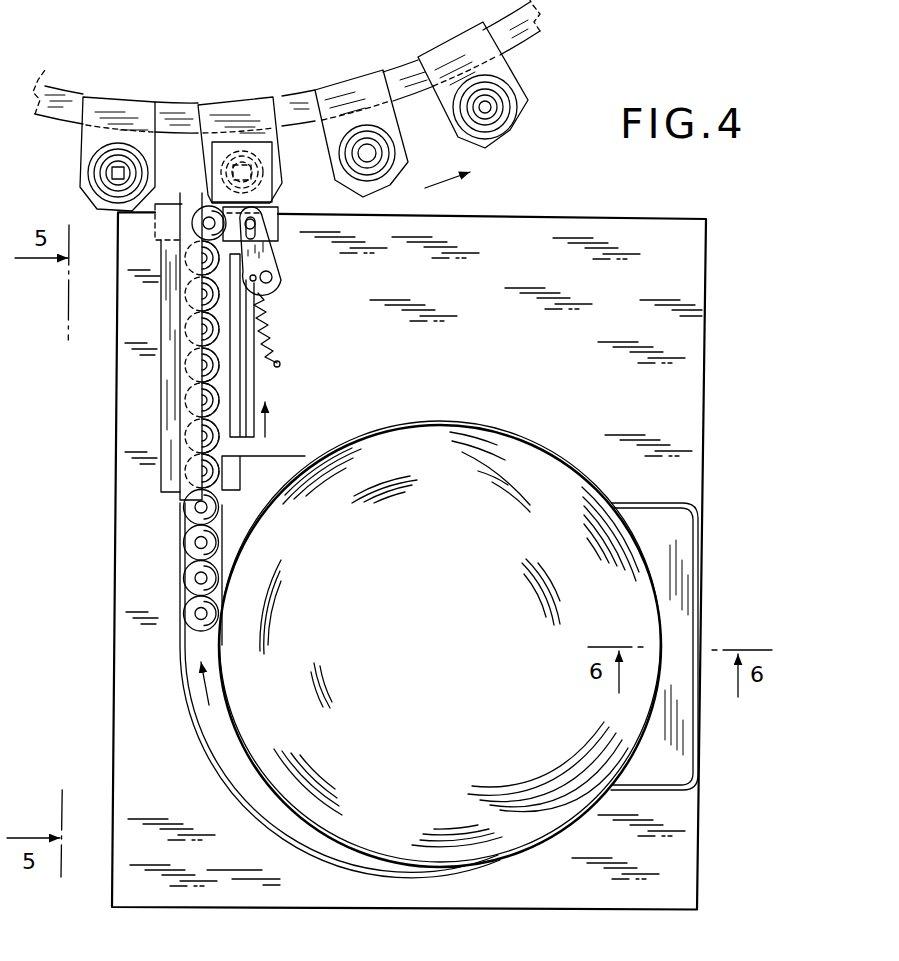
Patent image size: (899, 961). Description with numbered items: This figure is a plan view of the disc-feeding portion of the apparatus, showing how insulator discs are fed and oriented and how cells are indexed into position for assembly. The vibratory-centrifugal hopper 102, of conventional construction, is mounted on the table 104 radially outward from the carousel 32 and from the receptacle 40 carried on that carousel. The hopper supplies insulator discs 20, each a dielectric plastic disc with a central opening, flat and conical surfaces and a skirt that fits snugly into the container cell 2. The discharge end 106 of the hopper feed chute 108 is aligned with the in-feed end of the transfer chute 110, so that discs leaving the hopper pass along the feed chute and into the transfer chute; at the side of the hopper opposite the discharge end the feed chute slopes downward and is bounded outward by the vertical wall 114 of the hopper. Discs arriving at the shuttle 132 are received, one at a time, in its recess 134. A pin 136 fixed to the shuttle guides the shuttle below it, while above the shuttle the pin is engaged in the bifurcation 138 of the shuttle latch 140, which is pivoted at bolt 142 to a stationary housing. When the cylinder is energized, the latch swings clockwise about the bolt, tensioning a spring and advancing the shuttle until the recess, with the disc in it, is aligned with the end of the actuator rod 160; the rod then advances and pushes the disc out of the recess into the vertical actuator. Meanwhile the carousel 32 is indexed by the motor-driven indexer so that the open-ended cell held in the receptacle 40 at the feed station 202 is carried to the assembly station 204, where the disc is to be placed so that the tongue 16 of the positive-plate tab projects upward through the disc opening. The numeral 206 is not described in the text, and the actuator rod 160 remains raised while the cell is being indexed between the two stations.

The container cell 2 is at (100, 172).
The tongue 16 is at (107, 177).
The insulator disc 20 is at (195, 577).
The carousel 32 is at (541, 33).
The receptacle 40 is at (128, 153).
The vibratory-centrifugal hopper 102 is at (405, 641).
The table 104 is at (470, 350).
The discharge end 106 is at (225, 523).
The hopper feed chute 108 is at (198, 735).
The transfer chute 110 is at (158, 403).
The vertical wall 114 is at (703, 563).
The shuttle 132 is at (277, 220).
The recess 134 is at (183, 193).
The pin 136 is at (257, 220).
The bifurcation 138 is at (277, 238).
The shuttle latch 140 is at (268, 290).
The bolt 142 is at (272, 275).
The actuator rod 160 is at (250, 383).
The feed station 202 is at (122, 84).
The assembly station 204 is at (235, 90).
The carrier 206 is at (346, 78).